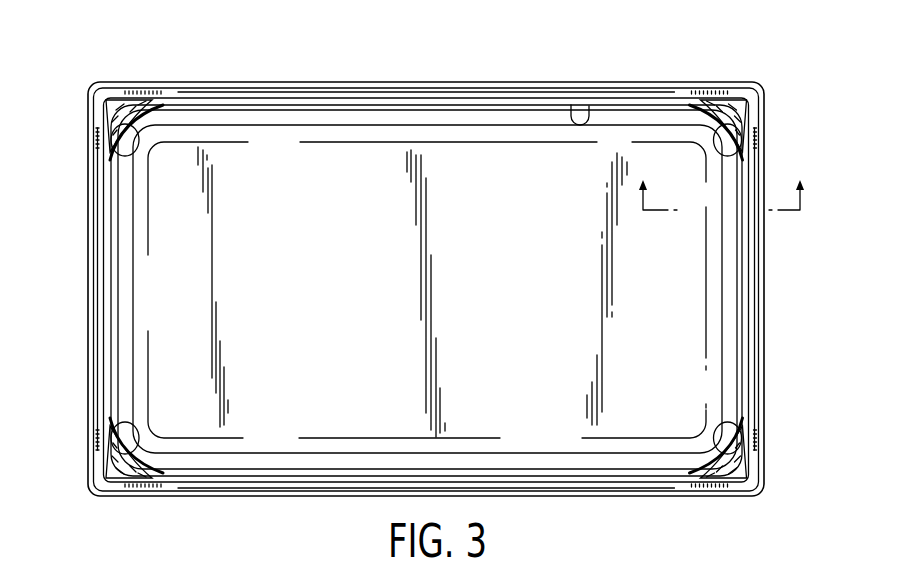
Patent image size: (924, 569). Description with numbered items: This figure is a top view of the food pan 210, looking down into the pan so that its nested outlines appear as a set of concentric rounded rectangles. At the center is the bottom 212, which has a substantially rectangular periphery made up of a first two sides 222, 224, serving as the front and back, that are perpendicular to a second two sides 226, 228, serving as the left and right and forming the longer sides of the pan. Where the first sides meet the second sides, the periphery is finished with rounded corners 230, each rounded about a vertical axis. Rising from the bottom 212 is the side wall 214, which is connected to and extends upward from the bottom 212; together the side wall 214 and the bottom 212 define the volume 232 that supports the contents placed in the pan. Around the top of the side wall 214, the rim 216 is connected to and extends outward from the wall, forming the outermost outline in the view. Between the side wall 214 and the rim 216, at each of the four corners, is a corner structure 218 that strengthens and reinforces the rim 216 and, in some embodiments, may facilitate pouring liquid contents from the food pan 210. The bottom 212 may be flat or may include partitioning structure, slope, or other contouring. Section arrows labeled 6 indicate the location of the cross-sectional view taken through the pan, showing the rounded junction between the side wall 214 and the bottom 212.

The food pan 210 is at (68, 116).
The bottom 212 is at (544, 300).
The side wall 214 is at (572, 104).
The rim 216 is at (637, 95).
The corner structure 218 is at (113, 72).
The first side 222 is at (757, 326).
The first side 224 is at (104, 328).
The second side 226 is at (491, 97).
The second side 228 is at (567, 489).
The rounded corner 230 is at (114, 151).
The volume 232 is at (308, 171).
The section line 6 is at (722, 211).